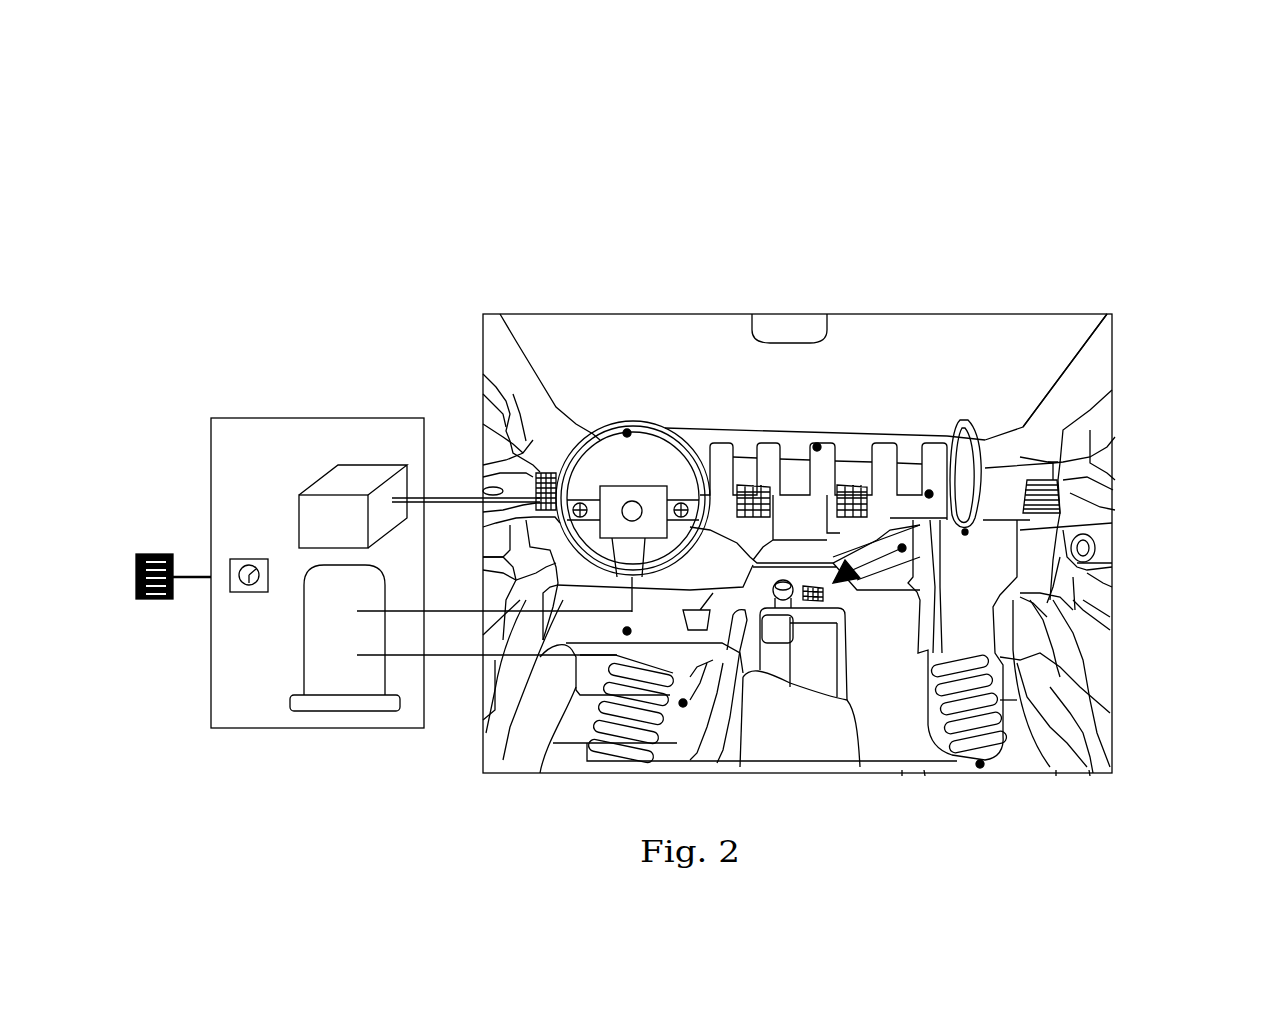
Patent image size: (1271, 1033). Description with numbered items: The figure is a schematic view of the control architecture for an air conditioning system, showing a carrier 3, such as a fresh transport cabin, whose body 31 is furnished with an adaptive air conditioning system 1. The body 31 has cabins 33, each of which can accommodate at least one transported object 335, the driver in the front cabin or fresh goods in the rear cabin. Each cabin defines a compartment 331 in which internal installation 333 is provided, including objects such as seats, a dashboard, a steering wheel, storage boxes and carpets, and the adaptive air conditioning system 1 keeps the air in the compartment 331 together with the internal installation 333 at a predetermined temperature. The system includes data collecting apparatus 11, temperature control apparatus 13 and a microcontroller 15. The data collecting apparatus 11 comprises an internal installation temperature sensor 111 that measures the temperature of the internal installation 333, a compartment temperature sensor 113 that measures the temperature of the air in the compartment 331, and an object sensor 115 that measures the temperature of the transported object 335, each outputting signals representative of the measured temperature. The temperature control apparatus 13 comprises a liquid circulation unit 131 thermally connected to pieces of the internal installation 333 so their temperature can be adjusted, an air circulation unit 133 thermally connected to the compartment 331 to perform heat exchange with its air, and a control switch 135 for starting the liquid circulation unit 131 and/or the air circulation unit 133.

The adaptive air conditioning system 1 is at (205, 227).
The carrier 3 is at (960, 125).
The data collecting apparatus 11 is at (917, 226).
The internal installation temperature sensor 111 is at (627, 433).
The compartment temperature sensor 113 is at (812, 586).
The object sensor 115 is at (977, 425).
The temperature control apparatus 13 is at (333, 302).
The liquid circulation unit 131 is at (335, 672).
The air circulation unit 133 is at (540, 485).
The control switch 135 is at (250, 560).
The microcontroller 15 is at (153, 553).
The body 31 is at (1112, 352).
The cabins 33 is at (1040, 317).
The compartment 331 is at (1186, 491).
The internal installation 333 is at (1043, 563).
The transported object 335 is at (1107, 713).